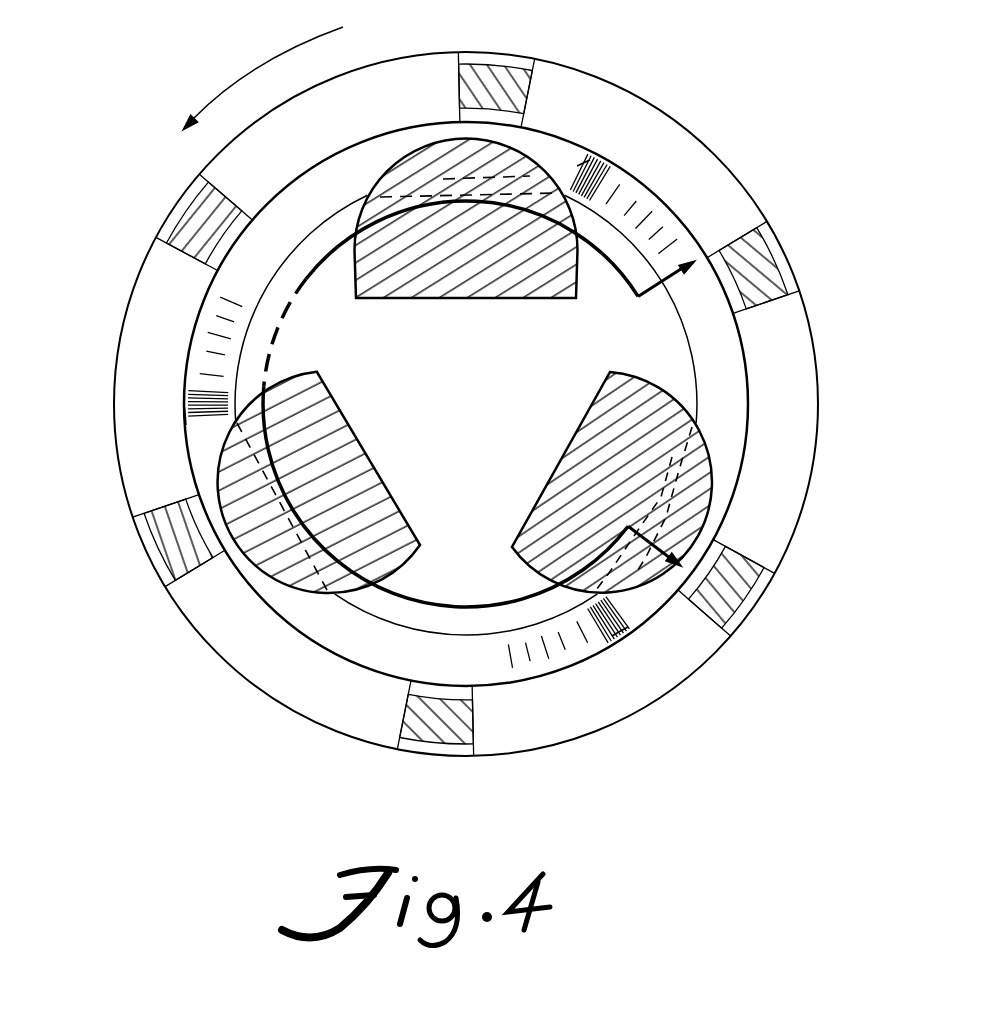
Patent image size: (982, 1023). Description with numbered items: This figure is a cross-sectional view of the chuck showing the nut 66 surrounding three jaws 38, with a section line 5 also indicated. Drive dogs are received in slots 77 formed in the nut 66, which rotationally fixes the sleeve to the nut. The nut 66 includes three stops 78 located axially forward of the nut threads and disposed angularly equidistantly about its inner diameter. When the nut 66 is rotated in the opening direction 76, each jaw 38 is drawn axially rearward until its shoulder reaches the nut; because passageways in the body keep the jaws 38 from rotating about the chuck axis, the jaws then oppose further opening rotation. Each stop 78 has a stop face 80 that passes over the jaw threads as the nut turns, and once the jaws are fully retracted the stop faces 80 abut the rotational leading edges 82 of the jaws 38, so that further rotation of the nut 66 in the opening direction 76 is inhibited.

The section line 5- 5 is at (482, 404).
The jaw 38 is at (487, 300).
The nut 66 is at (818, 300).
The opening direction 76 is at (250, 72).
The slot 77 is at (476, 53).
The stop 78 is at (166, 378).
The stop face 80 is at (578, 166).
The rotational leading edge 82 is at (554, 160).